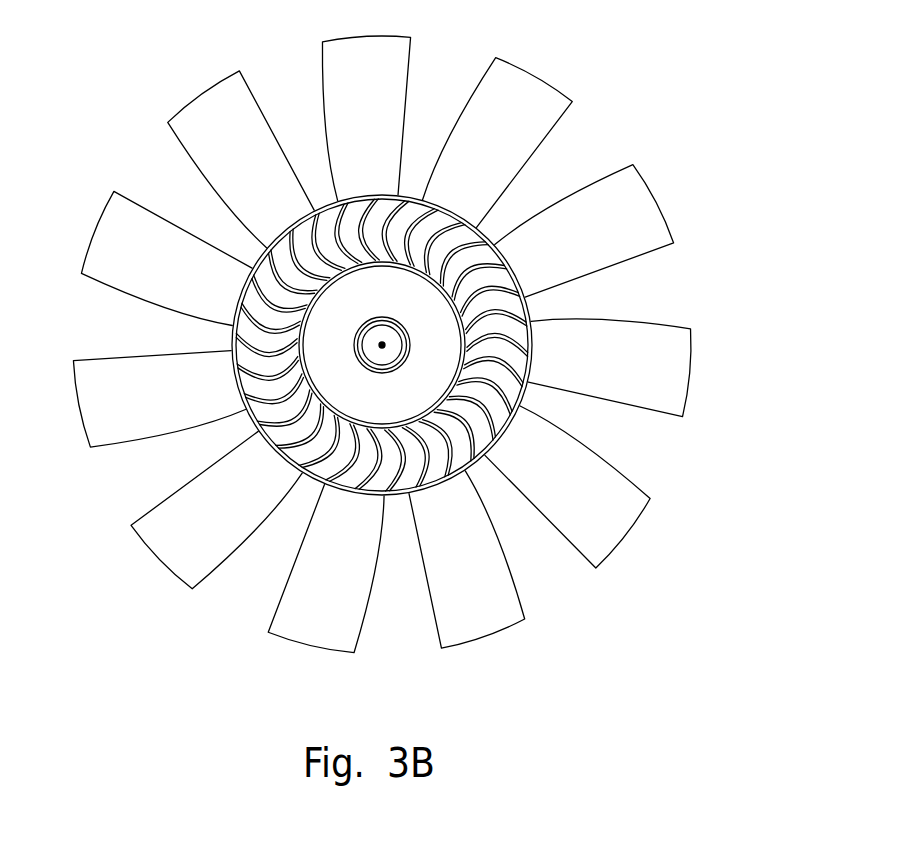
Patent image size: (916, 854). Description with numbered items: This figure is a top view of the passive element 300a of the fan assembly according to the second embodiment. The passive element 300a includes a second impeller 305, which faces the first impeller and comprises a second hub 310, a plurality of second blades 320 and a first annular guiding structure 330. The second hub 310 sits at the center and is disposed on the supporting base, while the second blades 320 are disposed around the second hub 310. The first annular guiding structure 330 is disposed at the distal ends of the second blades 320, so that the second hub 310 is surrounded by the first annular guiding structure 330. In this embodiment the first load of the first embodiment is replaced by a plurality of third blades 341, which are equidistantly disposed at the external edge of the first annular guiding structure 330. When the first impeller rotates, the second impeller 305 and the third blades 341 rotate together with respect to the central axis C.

The passive element 300a is at (757, 63).
The second impeller 305 is at (562, 324).
The second hub 310 is at (526, 325).
The second blades 320 is at (559, 345).
The first annular guiding structure 330 is at (527, 346).
The third blades 341 is at (648, 499).
The central axis C is at (382, 349).